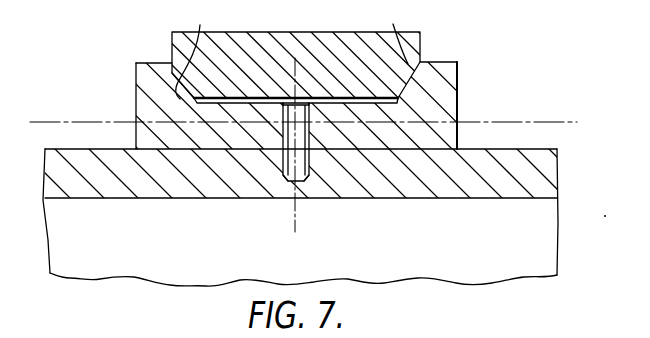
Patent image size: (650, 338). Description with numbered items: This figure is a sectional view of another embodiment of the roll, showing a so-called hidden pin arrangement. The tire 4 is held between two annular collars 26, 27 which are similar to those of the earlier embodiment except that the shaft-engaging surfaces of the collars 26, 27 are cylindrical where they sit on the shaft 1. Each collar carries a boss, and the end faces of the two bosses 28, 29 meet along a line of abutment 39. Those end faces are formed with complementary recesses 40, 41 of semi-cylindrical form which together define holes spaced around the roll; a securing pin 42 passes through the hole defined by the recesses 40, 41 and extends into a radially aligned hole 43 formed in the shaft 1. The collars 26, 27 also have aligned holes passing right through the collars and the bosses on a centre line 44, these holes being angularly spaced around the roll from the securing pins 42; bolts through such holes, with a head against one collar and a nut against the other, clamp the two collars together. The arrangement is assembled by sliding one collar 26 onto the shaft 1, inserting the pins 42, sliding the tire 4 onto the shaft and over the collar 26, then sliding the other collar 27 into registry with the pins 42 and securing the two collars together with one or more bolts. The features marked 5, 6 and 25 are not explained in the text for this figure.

The shaft 1 is at (167, 177).
The tire 4 is at (328, 45).
The rounded edge of plate 5 is at (292, 49).
The clamping ring 6 is at (168, 99).
The shim 25 is at (246, 100).
The annular collar 26 is at (158, 72).
The annular collar 27 is at (440, 78).
The boss 28 is at (226, 138).
The boss 29 is at (368, 133).
The line of abutment 39 is at (295, 190).
The recess 40 is at (283, 128).
The recess 41 is at (309, 128).
The securing pin 42 is at (300, 184).
The hole 43 is at (291, 185).
The centre line 44 is at (547, 121).